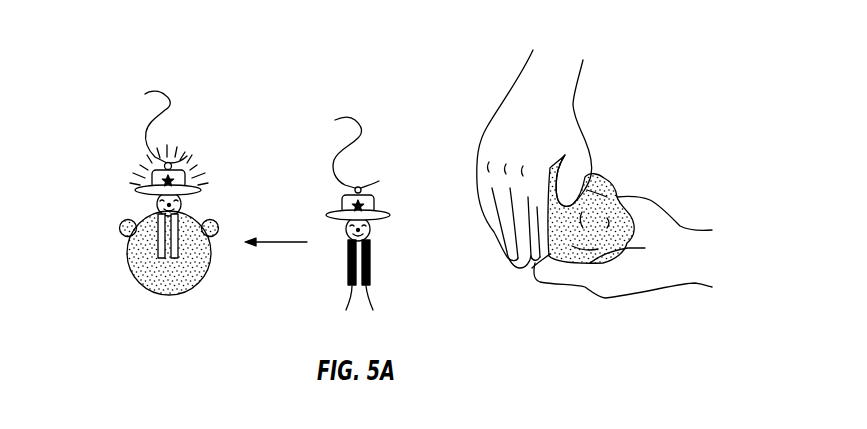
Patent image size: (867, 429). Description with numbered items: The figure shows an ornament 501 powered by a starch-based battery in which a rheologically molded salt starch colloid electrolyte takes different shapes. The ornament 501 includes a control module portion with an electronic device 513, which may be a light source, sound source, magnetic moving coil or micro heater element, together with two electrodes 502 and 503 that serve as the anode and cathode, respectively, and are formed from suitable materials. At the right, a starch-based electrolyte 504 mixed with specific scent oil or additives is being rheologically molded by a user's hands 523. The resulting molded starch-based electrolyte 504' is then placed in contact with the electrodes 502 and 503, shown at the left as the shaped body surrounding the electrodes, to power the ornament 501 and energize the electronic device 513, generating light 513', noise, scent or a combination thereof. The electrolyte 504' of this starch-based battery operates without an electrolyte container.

The ornament 501 is at (346, 202).
The electrode (anode) 502 is at (350, 307).
The electrode (cathode) 503 is at (367, 307).
The starch-based electrolyte 504 is at (591, 197).
The molded starch-based electrolyte 504' is at (169, 276).
The electronic device 513 is at (377, 199).
The light 513' is at (198, 170).
The user's hands 523 is at (503, 110).